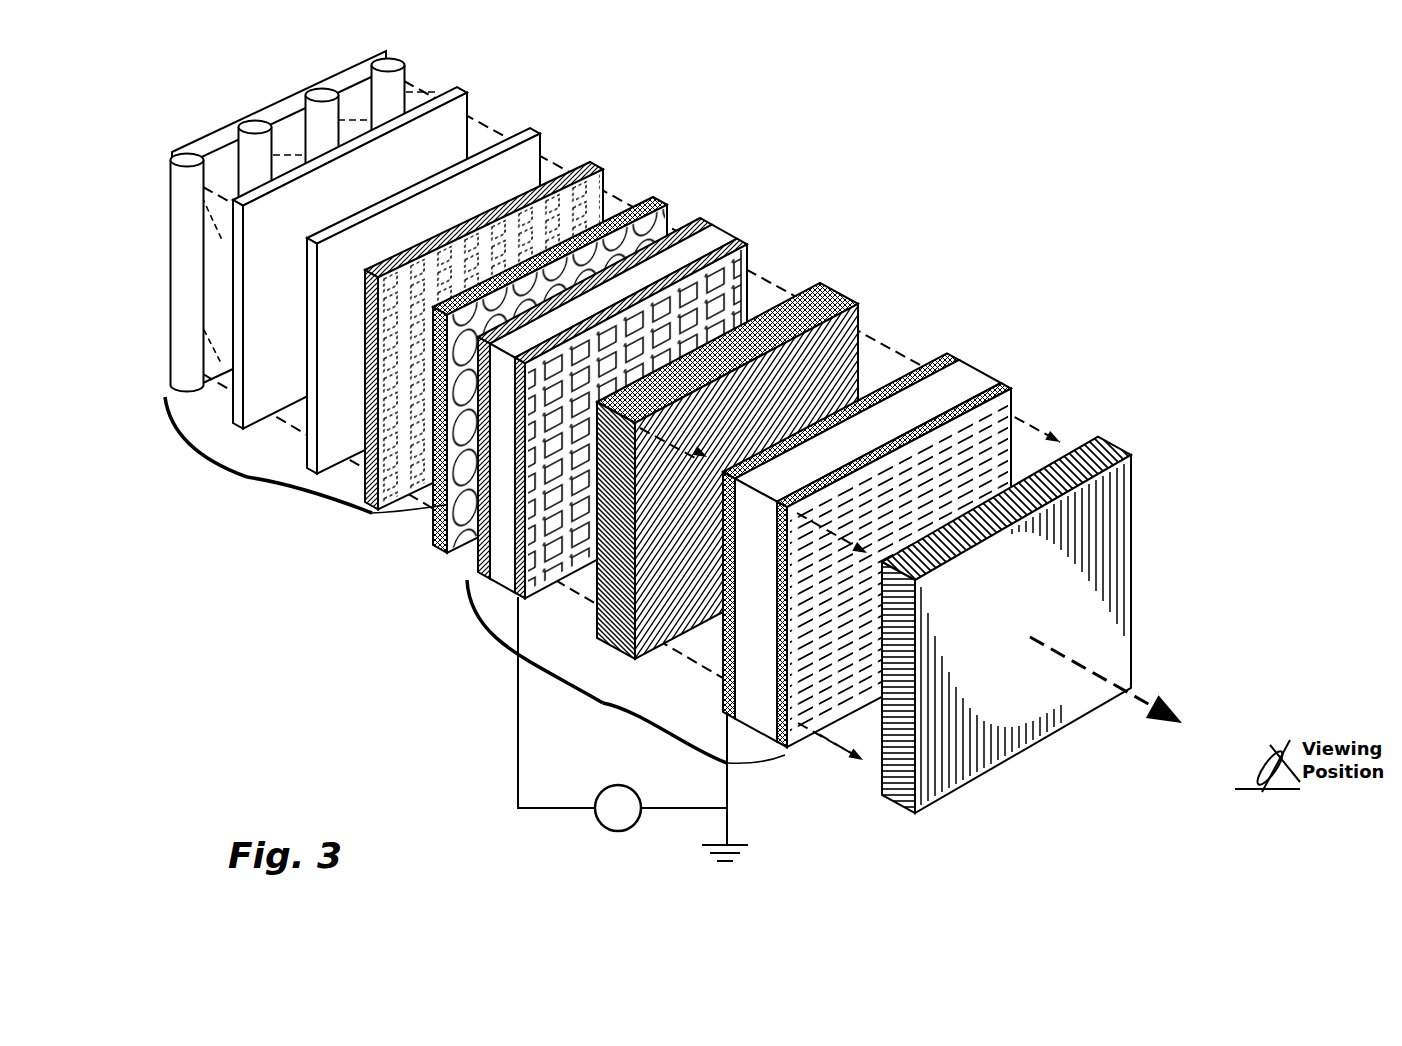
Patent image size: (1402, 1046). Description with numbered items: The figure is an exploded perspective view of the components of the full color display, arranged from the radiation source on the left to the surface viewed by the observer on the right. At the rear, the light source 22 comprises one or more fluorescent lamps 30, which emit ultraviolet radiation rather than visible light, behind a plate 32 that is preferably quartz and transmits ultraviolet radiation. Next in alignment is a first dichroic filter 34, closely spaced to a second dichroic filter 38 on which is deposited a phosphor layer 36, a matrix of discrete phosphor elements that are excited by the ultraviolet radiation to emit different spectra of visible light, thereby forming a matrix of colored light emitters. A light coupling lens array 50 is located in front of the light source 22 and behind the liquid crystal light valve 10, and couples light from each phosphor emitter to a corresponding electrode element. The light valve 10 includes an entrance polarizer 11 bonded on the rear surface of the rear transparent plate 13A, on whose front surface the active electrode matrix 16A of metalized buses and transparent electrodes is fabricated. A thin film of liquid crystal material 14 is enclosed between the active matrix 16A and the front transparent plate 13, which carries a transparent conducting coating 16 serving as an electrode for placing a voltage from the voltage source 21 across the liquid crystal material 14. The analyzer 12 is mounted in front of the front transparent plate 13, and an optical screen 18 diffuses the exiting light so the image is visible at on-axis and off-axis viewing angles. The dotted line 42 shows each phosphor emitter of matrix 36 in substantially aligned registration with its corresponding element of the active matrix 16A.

The liquid crystal light valve 10 is at (626, 671).
The entrance polarizer 11 is at (703, 218).
The exit polarizer (analyzer) 12 is at (1012, 388).
The front transparent plate 13 is at (977, 363).
The rear transparent plate 13A is at (728, 238).
The liquid crystal material 14 is at (840, 292).
The transparent conducting coating 16 is at (950, 357).
The active electrode matrix 16A is at (748, 247).
The optical screen 18 is at (1114, 447).
The voltage source 21 is at (603, 823).
The light source 22 is at (305, 455).
The fluorescent lamp 30 is at (170, 238).
The plate 32 is at (463, 90).
The first dichroic filter 34 is at (538, 132).
The phosphor layer 36 is at (417, 487).
The second dichroic filter 38 is at (593, 163).
The dotted line 42 is at (478, 565).
The light coupling lens array 50 is at (657, 197).